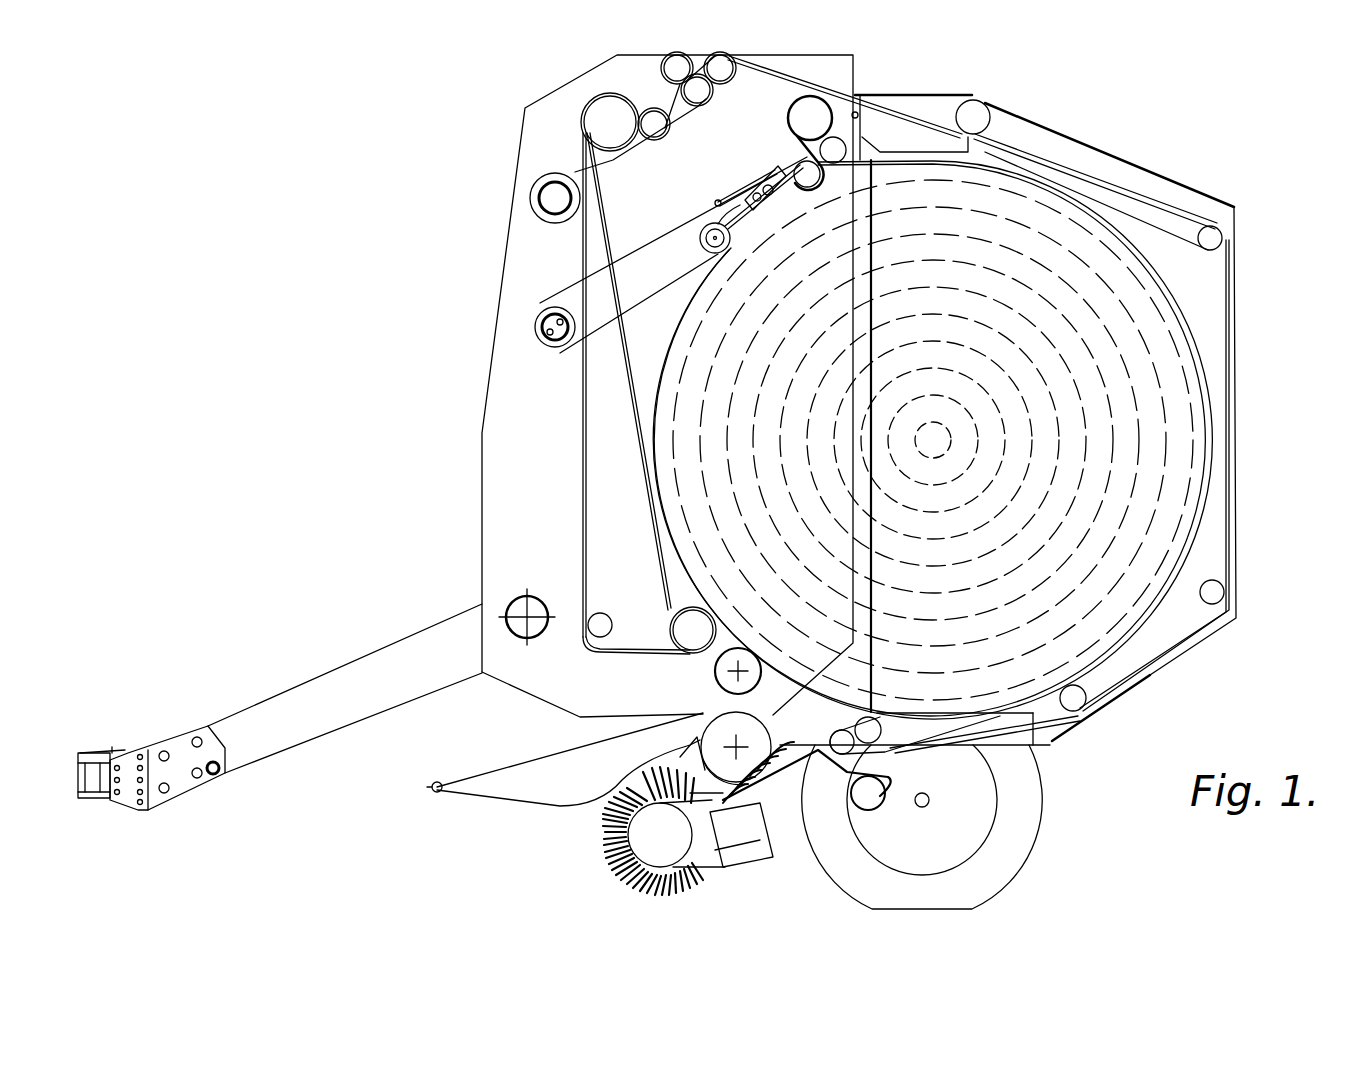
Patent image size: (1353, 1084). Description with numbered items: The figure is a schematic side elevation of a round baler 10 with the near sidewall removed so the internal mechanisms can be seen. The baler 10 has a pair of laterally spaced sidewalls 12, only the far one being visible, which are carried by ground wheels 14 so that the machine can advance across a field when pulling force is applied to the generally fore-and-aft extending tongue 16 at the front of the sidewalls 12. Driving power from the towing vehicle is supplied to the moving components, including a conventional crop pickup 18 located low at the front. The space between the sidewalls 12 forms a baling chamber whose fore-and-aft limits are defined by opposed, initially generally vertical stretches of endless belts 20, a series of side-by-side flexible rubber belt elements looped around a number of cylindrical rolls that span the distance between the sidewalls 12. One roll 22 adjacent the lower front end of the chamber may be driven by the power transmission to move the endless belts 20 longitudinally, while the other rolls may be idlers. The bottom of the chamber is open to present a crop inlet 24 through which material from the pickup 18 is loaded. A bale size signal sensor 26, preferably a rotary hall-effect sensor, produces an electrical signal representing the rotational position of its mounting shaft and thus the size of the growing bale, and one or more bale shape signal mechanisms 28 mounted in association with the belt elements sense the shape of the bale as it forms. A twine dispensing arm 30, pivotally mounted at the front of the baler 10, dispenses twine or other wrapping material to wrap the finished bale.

The round baler 10 is at (1140, 137).
The sidewalls 12 is at (1240, 398).
The ground wheels 14 is at (1020, 843).
The tongue 16 is at (322, 692).
The crop pickup 18 is at (592, 865).
The endless belts 20 is at (640, 520).
The roll 22 is at (683, 640).
The crop inlet 24 is at (813, 707).
The bale size signal sensor 26 is at (540, 317).
The bale shape signal mechanisms 28 is at (740, 185).
The twine dispensing arm 30 is at (470, 782).